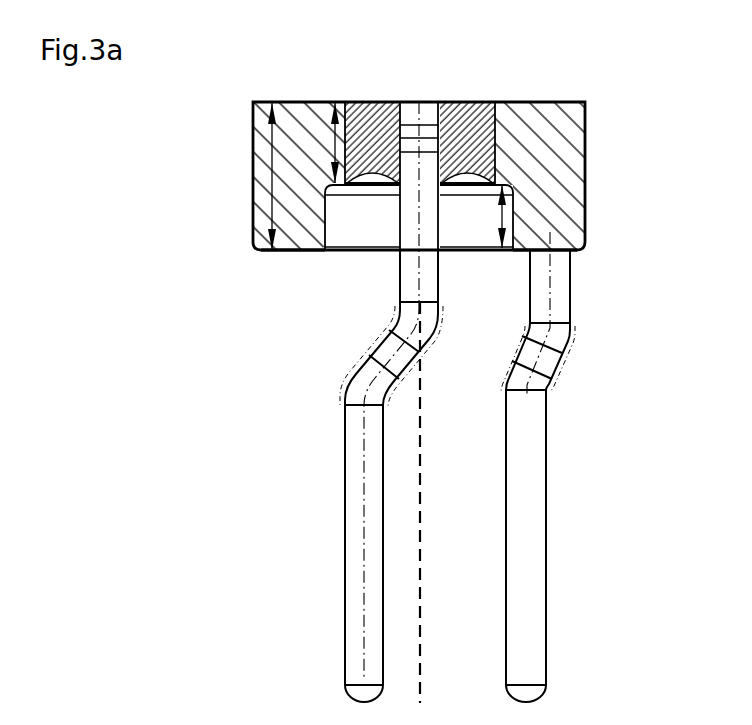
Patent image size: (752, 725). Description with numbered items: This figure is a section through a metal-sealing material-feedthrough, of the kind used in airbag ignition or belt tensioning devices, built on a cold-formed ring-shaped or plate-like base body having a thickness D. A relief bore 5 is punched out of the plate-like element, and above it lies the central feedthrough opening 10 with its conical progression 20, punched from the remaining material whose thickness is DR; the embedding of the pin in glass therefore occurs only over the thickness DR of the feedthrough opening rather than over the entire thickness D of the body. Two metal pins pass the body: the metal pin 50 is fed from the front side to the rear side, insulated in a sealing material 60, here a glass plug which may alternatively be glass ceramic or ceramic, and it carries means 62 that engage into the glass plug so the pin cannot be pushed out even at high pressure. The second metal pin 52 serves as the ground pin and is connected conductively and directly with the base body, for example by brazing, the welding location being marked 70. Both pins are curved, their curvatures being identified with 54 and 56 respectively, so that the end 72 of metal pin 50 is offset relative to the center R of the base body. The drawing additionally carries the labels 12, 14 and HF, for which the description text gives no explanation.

The relief bore 5 is at (362, 235).
The feedthrough opening 10 is at (495, 125).
The housing 12 is at (531, 103).
The housing bottom side 14 is at (288, 253).
The conical progression 20 is at (345, 133).
The metal pin 50 is at (357, 557).
The second metal pin 52 is at (530, 557).
The curvature of metal pin 54 is at (380, 353).
The curvature of second metal pin 56 is at (540, 363).
The sealing material 60 is at (470, 115).
The means on metal pin 62 is at (410, 125).
The welding location 70 is at (576, 253).
The end of metal pin 72 is at (362, 693).
The thickness of plate-like element D is at (272, 170).
The thickness of remaining material DR is at (333, 145).
The cavity height HF is at (500, 218).
The center of base body R is at (421, 557).